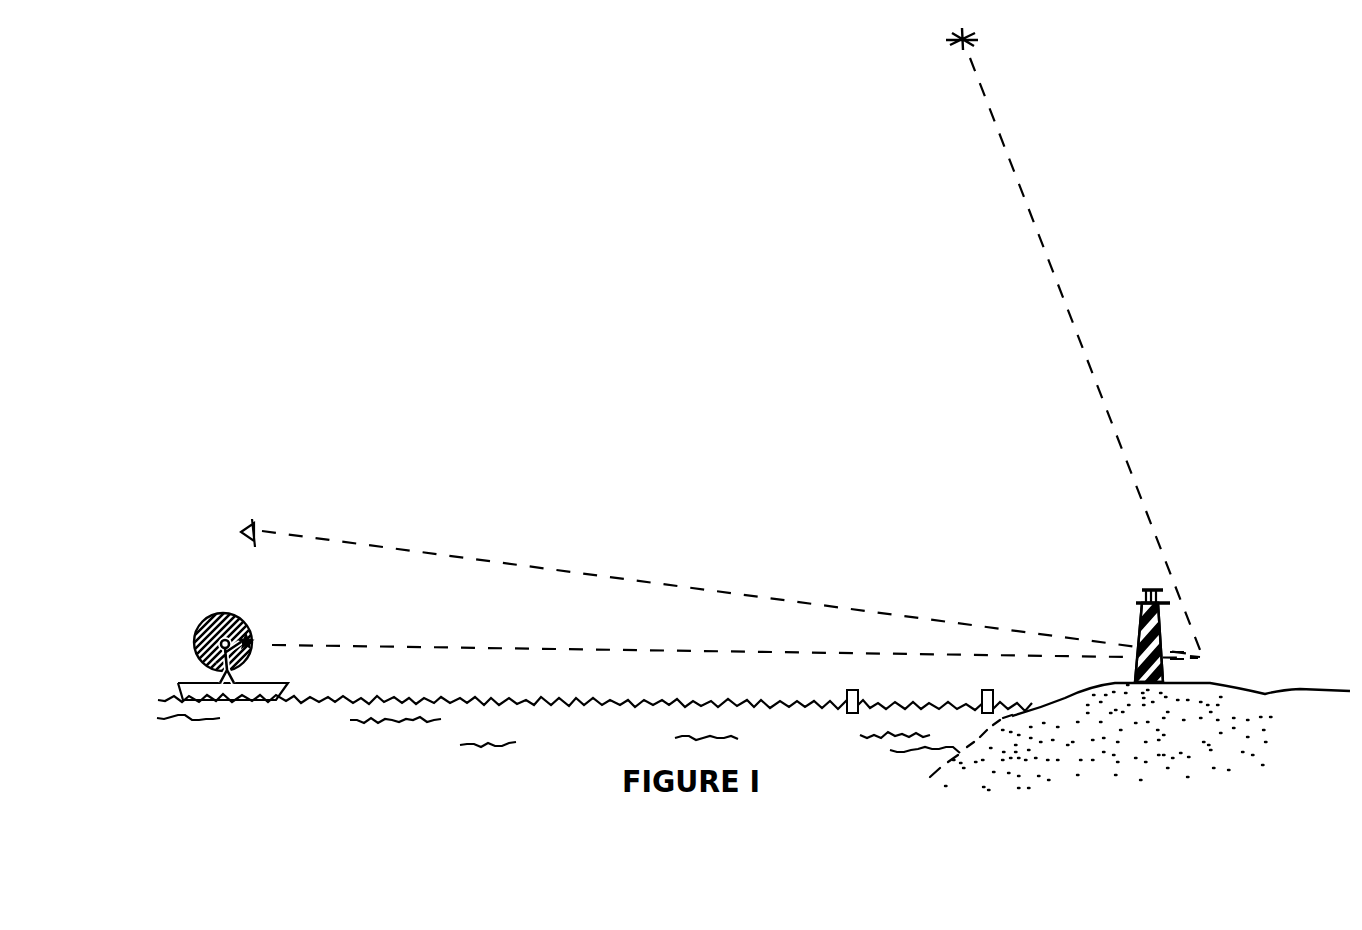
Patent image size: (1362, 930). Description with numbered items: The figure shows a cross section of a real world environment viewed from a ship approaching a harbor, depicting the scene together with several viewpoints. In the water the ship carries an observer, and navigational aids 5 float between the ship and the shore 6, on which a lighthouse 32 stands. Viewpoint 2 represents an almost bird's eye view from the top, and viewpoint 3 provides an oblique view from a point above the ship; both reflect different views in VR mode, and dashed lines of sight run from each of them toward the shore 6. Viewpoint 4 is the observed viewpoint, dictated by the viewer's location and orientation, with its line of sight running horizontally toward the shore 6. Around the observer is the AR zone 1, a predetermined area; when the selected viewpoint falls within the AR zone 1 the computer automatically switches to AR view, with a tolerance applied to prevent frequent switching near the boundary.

The AR zone 1 is at (211, 620).
The viewpoint 2 is at (930, 48).
The viewpoint 3 is at (233, 529).
The observed viewpoint 4 is at (258, 632).
The navigational aids 5 is at (840, 696).
The shore 6 is at (1228, 658).
The lighthouse 32 is at (1130, 591).